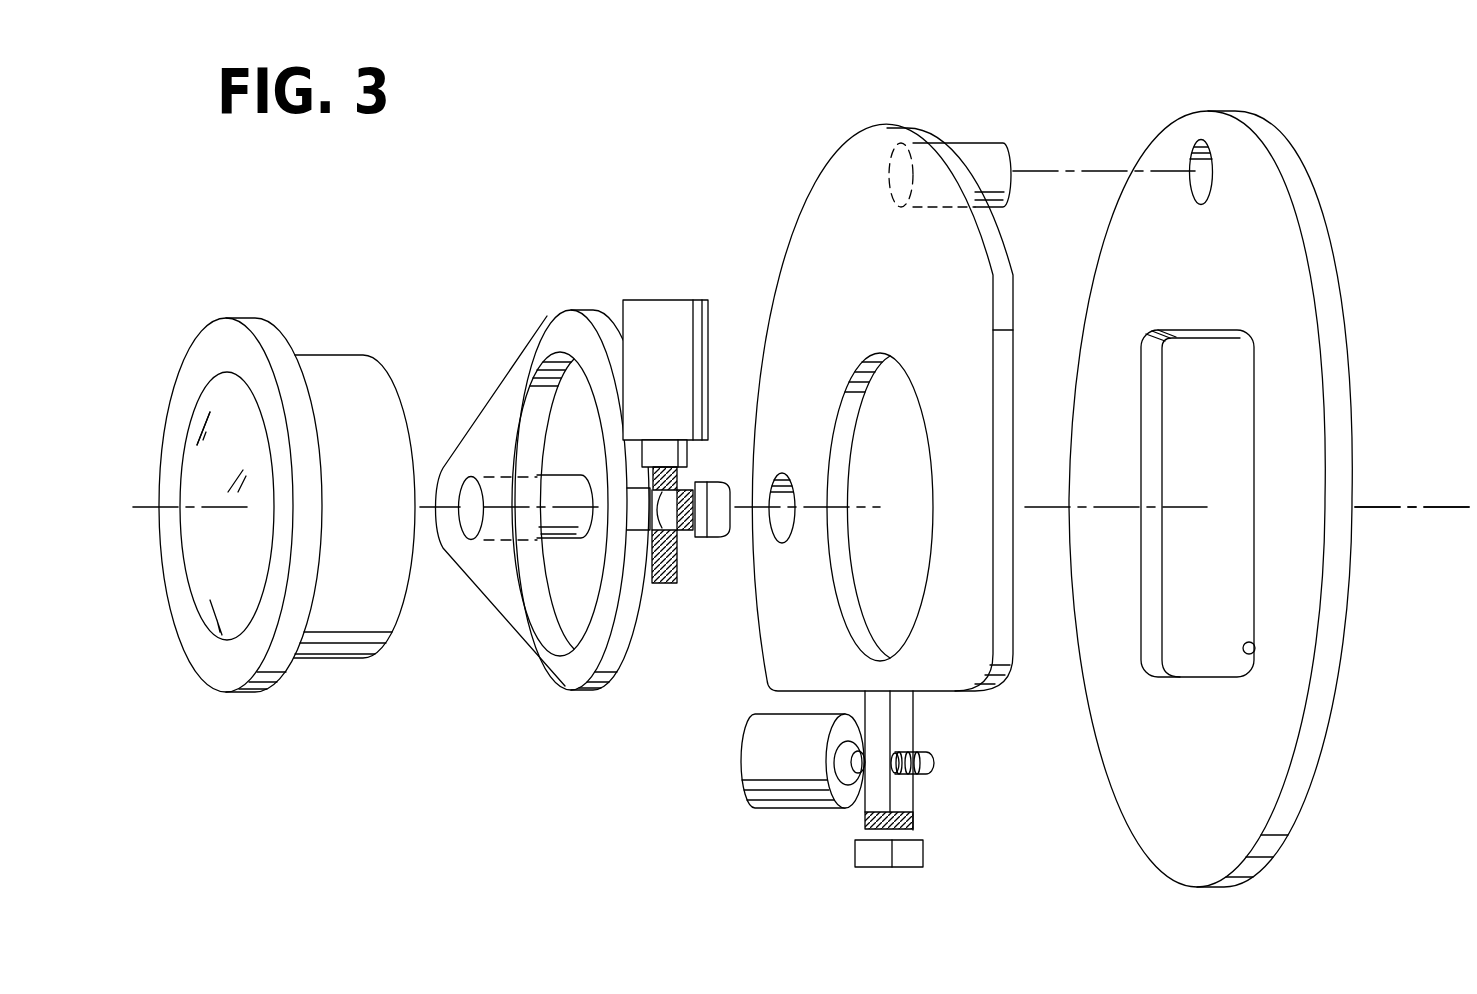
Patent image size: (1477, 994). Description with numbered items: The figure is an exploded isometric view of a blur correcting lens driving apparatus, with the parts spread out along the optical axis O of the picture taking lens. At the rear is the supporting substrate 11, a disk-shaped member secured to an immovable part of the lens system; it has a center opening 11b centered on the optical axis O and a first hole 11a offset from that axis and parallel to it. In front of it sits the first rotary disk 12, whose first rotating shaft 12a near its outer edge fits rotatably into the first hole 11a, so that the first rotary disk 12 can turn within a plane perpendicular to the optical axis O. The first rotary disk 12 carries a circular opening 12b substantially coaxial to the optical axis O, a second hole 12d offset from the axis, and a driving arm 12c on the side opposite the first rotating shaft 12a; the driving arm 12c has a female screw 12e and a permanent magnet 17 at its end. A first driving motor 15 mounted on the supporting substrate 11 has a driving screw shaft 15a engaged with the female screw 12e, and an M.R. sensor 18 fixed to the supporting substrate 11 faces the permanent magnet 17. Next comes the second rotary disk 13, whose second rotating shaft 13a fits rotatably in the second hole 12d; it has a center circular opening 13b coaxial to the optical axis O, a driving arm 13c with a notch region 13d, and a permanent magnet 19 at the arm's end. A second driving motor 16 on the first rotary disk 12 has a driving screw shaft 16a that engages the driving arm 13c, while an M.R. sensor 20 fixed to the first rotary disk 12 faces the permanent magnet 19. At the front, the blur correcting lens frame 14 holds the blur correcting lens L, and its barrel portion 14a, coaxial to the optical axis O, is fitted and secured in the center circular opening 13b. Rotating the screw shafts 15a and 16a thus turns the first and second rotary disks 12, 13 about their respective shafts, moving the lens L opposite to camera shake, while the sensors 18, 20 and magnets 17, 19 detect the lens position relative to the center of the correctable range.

The supporting substrate 11 is at (1347, 289).
The first hole 11a is at (1203, 170).
The center opening 11b is at (1253, 658).
The first rotary disk 12 is at (815, 170).
The first rotating shaft 12a is at (983, 140).
The circular opening 12b is at (847, 387).
The driving arm 12c is at (907, 803).
The second hole 12d is at (783, 480).
The female screw 12e is at (919, 752).
The second rotary disk 13 is at (535, 300).
The second rotating shaft 13a is at (556, 488).
The center circular opening 13b is at (543, 617).
The driving arm 13c is at (663, 517).
The notch of lens holder 13d is at (648, 526).
The blur correcting lens frame 14 is at (244, 310).
The barrel portion 14a is at (335, 354).
The first driving motor 15 is at (753, 768).
The driving screw shaft 15a is at (931, 767).
The second driving motor 16 is at (640, 308).
The driving screw shaft 16a is at (658, 582).
The permanent magnet 17 is at (863, 821).
The M.R. sensor 18 is at (875, 855).
The permanent magnet 19 is at (683, 490).
The M.R. sensor 20 is at (733, 540).
The blur correcting lens L is at (201, 588).
The optical axis O is at (1392, 507).